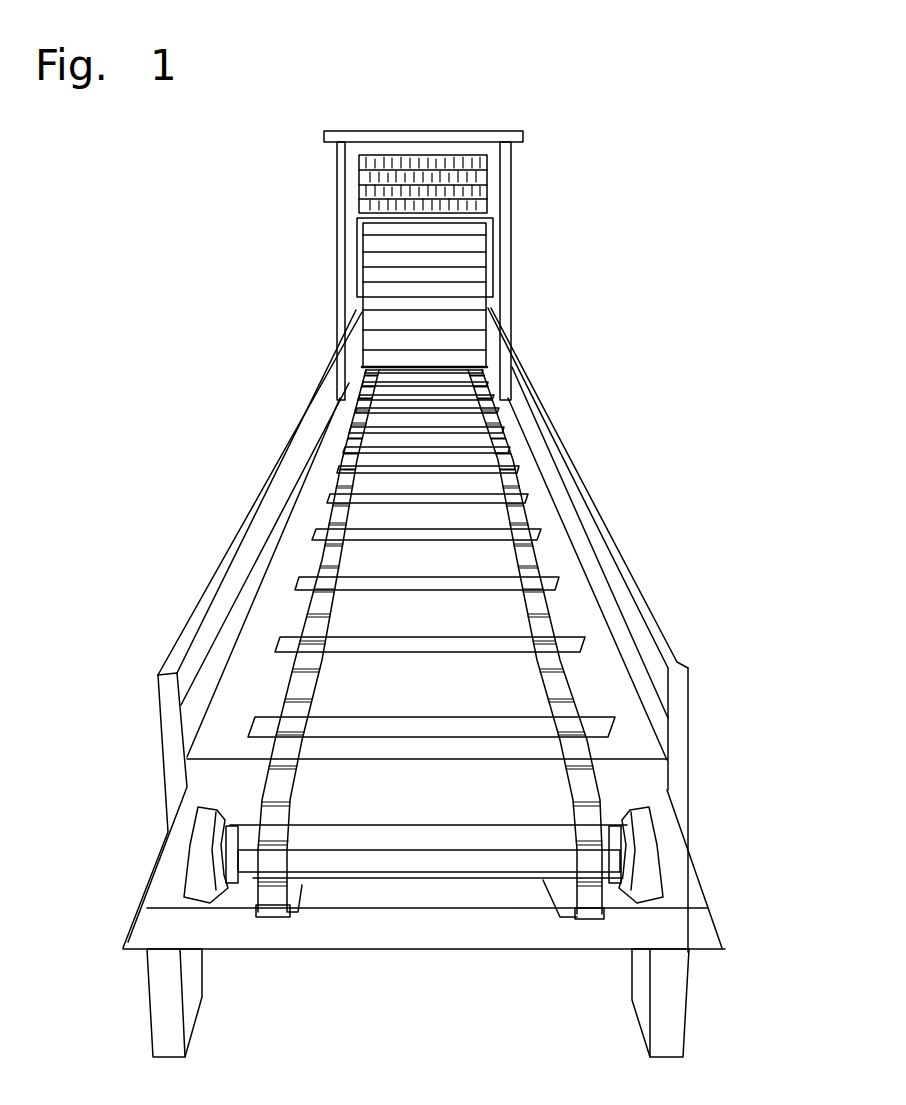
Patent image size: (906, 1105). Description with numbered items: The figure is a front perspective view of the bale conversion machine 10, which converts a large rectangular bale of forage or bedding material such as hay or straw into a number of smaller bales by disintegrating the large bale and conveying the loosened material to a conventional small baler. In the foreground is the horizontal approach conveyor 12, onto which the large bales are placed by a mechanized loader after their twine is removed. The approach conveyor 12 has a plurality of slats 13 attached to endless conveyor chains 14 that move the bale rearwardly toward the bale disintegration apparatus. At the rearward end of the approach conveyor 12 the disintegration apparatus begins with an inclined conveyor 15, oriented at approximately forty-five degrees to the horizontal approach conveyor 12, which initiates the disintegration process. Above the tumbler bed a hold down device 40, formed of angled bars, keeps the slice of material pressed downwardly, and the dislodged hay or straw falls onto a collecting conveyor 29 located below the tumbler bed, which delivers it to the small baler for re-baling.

The bale conversion machine 10 is at (566, 165).
The approach conveyor 12 is at (175, 779).
The slats 13 is at (470, 645).
The endless conveyor chains 14 is at (602, 787).
The inclined conveyor 15 is at (388, 262).
The collecting conveyor 29 is at (455, 345).
The hold down device 40 is at (360, 187).